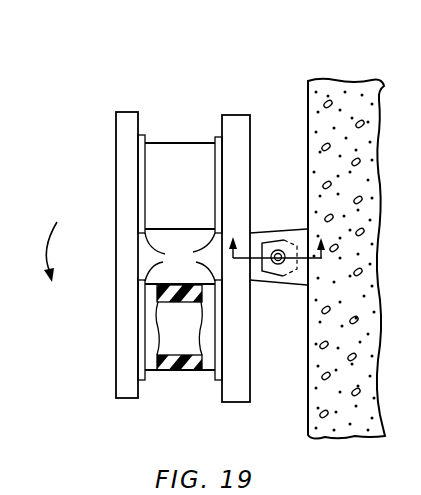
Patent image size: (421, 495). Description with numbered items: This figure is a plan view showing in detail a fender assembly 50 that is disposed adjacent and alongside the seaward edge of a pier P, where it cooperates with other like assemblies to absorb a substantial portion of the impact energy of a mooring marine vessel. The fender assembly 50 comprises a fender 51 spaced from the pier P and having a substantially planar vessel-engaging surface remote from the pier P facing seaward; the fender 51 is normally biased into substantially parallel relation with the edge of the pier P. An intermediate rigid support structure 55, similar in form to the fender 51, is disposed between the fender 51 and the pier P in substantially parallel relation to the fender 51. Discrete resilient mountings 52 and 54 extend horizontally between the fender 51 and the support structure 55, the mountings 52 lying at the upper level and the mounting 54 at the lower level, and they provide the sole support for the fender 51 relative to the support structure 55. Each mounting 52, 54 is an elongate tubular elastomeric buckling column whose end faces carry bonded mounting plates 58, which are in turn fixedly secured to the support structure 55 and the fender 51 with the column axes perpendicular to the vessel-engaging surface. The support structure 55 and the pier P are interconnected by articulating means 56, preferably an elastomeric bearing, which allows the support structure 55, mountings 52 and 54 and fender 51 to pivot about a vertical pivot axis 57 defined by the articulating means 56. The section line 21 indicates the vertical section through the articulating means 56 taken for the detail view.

The fender assembly 50 is at (145, 106).
The fender 51 is at (118, 143).
The resilient mounting 52 is at (165, 142).
The resilient mounting 54 is at (180, 373).
The intermediate rigid support structure 55 is at (240, 113).
The articulating means 56 is at (279, 239).
The vertical pivot axis 57 is at (277, 263).
The mounting plate 58 is at (180, 257).
The section line 21 is at (281, 263).
The pier P is at (357, 72).